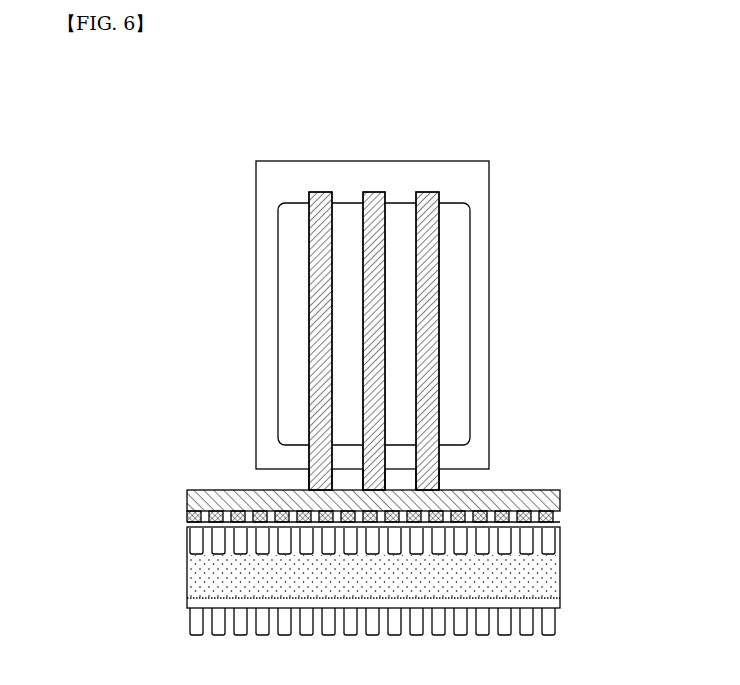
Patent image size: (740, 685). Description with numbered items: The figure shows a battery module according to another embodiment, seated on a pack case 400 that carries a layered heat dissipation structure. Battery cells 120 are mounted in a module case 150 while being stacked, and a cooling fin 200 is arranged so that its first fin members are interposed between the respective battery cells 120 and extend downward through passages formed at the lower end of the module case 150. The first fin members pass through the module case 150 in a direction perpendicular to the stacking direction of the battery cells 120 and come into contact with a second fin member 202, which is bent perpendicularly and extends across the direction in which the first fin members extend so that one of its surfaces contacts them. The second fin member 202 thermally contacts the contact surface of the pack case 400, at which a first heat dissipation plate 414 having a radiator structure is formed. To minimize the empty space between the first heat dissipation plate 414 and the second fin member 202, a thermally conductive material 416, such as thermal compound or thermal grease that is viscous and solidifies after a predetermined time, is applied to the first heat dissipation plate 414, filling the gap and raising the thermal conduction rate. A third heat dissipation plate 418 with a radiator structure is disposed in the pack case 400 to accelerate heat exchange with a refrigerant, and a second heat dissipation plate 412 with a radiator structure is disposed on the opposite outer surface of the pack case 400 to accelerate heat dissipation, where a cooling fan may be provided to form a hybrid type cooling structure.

The battery cells 120 is at (319, 324).
The module case 150 is at (414, 314).
The cooling fin 200 is at (389, 288).
The second fin member 202 is at (436, 435).
The pack case 400 is at (311, 573).
The second heat dissipation plate 412 is at (437, 625).
The first heat dissipation plate 414 is at (417, 468).
The thermally conductive material 416 is at (311, 495).
The third heat dissipation plate 418 is at (431, 524).